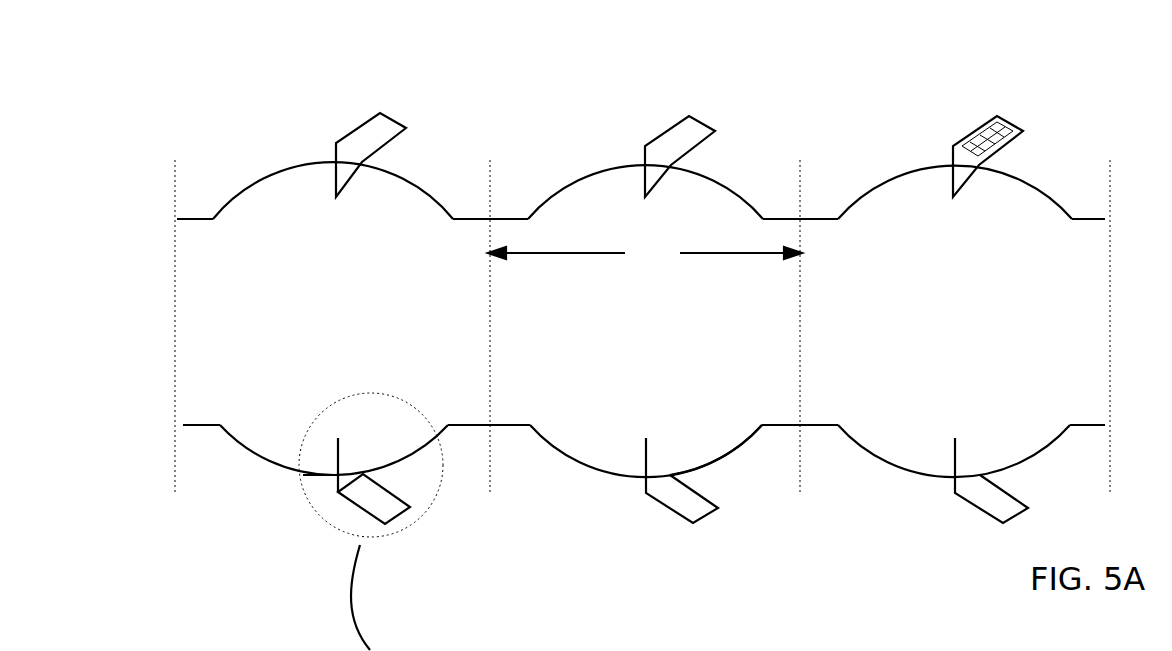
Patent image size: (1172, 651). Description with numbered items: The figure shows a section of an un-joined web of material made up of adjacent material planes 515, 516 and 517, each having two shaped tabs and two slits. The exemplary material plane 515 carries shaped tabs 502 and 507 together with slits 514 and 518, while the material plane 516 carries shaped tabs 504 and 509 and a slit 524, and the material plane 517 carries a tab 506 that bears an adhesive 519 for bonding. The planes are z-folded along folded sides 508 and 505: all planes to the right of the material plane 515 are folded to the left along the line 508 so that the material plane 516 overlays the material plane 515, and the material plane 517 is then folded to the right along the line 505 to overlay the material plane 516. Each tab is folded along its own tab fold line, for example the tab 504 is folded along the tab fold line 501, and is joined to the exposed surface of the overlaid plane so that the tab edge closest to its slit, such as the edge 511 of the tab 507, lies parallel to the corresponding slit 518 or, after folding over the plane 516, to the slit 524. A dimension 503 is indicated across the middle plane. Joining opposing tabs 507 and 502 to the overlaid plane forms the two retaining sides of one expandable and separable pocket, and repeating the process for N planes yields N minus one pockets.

The tab fold line 501 is at (667, 158).
The shaped tab 502 is at (400, 118).
The pitch dimension arrow 503 is at (650, 253).
The shaped tab 504 is at (688, 112).
The folded side 505 is at (806, 263).
The tab 506 is at (1019, 124).
The shaped tab 507 is at (380, 503).
The folded side 508 is at (490, 348).
The shaped tab 509 is at (700, 512).
The edge 511 is at (363, 510).
The slit 514 is at (330, 183).
The material plane 515 is at (312, 323).
The material plane 516 is at (677, 320).
The material plane 517 is at (980, 318).
The slit 518 is at (327, 458).
The adhesive 519 is at (1003, 122).
The slit 524 is at (647, 448).